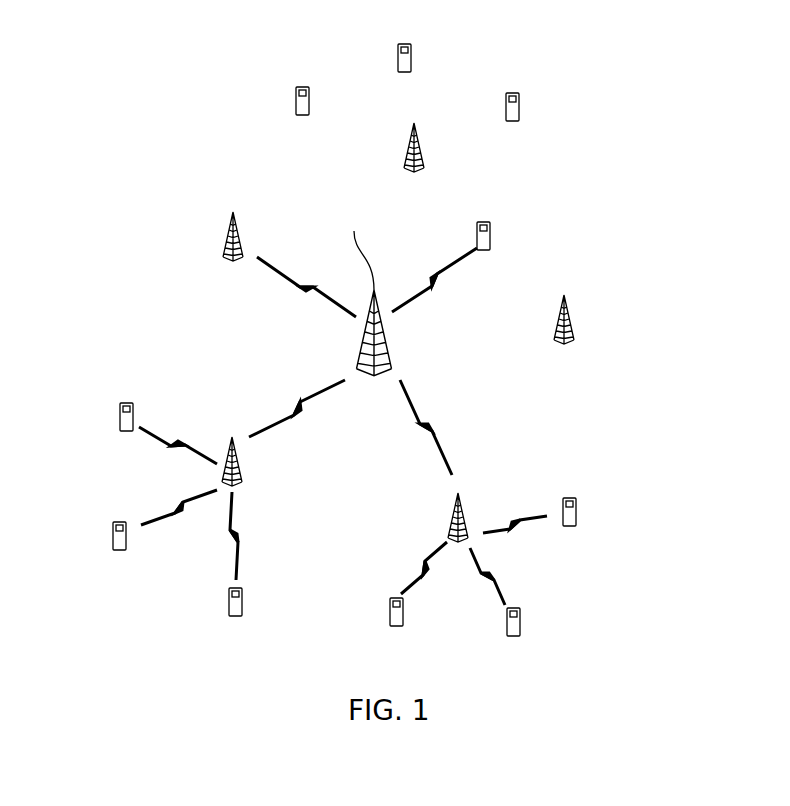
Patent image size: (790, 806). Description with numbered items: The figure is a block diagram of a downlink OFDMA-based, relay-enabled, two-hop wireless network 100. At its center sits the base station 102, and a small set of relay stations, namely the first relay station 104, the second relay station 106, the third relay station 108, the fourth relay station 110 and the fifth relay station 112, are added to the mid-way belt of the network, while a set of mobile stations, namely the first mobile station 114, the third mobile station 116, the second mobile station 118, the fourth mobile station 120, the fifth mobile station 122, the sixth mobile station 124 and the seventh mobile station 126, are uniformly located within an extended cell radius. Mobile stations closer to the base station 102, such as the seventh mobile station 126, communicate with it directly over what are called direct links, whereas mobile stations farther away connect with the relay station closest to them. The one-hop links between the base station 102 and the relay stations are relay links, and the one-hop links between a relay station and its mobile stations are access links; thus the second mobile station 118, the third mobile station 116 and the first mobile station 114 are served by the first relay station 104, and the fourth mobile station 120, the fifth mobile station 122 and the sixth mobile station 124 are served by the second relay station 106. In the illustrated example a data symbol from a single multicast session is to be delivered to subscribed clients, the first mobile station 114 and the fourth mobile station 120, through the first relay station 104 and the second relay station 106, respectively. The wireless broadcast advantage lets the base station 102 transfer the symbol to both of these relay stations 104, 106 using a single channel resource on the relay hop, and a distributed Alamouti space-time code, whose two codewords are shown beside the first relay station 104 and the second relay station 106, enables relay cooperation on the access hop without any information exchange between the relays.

The two-hop wireless network 100 is at (412, 22).
The base station 102 is at (388, 334).
The relay station RS1 104 is at (227, 450).
The relay station RS2 106 is at (465, 518).
The relay station RS3 108 is at (574, 316).
The relay station RS4 110 is at (419, 142).
The relay station RS5 112 is at (228, 228).
The mobile station MS1 114 is at (242, 600).
The mobile station MS3 116 is at (112, 548).
The mobile station MS2 118 is at (125, 403).
The mobile station MS4 120 is at (403, 610).
The mobile station MS5 122 is at (520, 618).
The mobile station MS6 124 is at (577, 510).
The mobile station MS7 126 is at (491, 232).